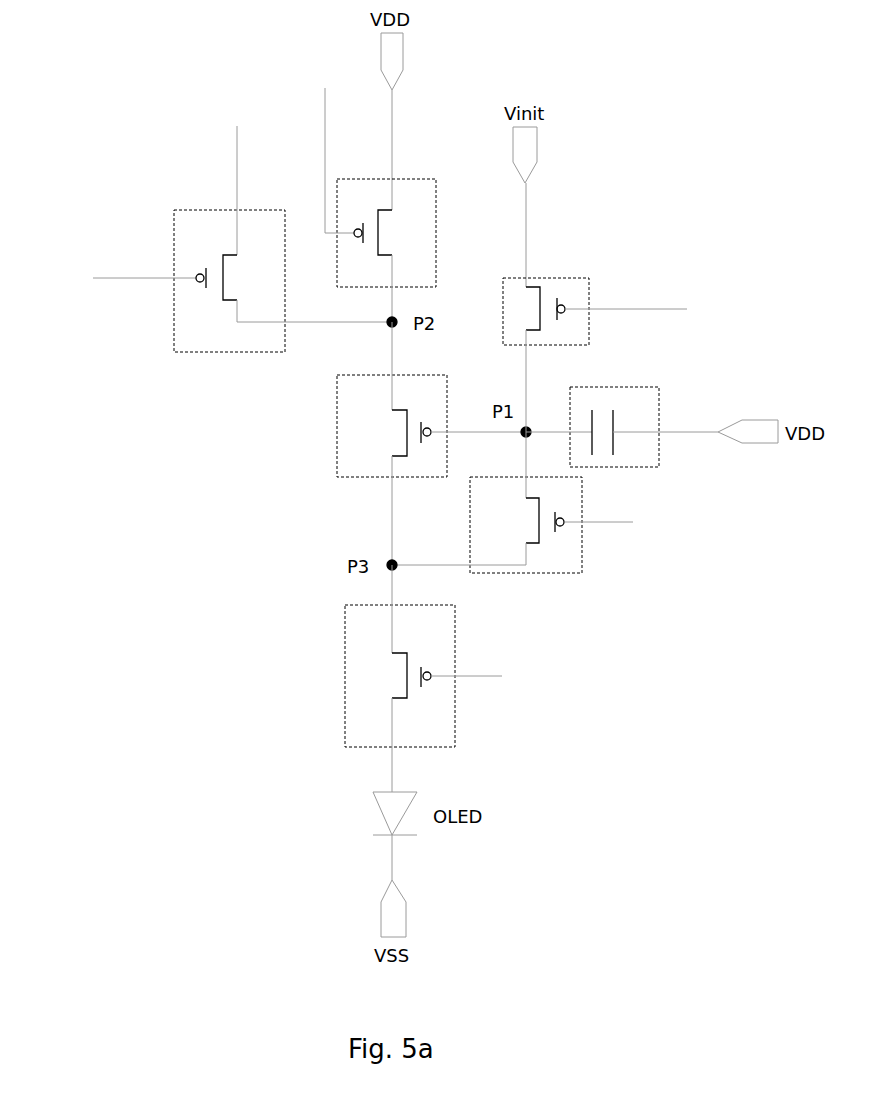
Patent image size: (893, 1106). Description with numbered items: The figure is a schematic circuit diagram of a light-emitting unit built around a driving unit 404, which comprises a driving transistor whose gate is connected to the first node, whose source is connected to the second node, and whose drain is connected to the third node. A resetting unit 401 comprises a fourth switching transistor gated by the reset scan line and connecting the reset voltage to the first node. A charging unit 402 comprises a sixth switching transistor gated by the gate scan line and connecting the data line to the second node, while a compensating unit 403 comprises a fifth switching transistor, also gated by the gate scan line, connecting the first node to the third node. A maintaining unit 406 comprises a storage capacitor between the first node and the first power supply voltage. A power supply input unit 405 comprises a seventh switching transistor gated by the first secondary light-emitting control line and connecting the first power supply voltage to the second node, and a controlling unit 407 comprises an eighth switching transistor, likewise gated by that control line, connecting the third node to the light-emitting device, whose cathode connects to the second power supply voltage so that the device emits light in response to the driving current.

The resetting unit 401 is at (590, 285).
The charging unit 402 is at (174, 207).
The compensating unit 403 is at (582, 565).
The driving unit 404 is at (337, 423).
The power supply input unit 405 is at (427, 178).
The maintaining unit 406 is at (659, 455).
The controlling unit 407 is at (455, 730).